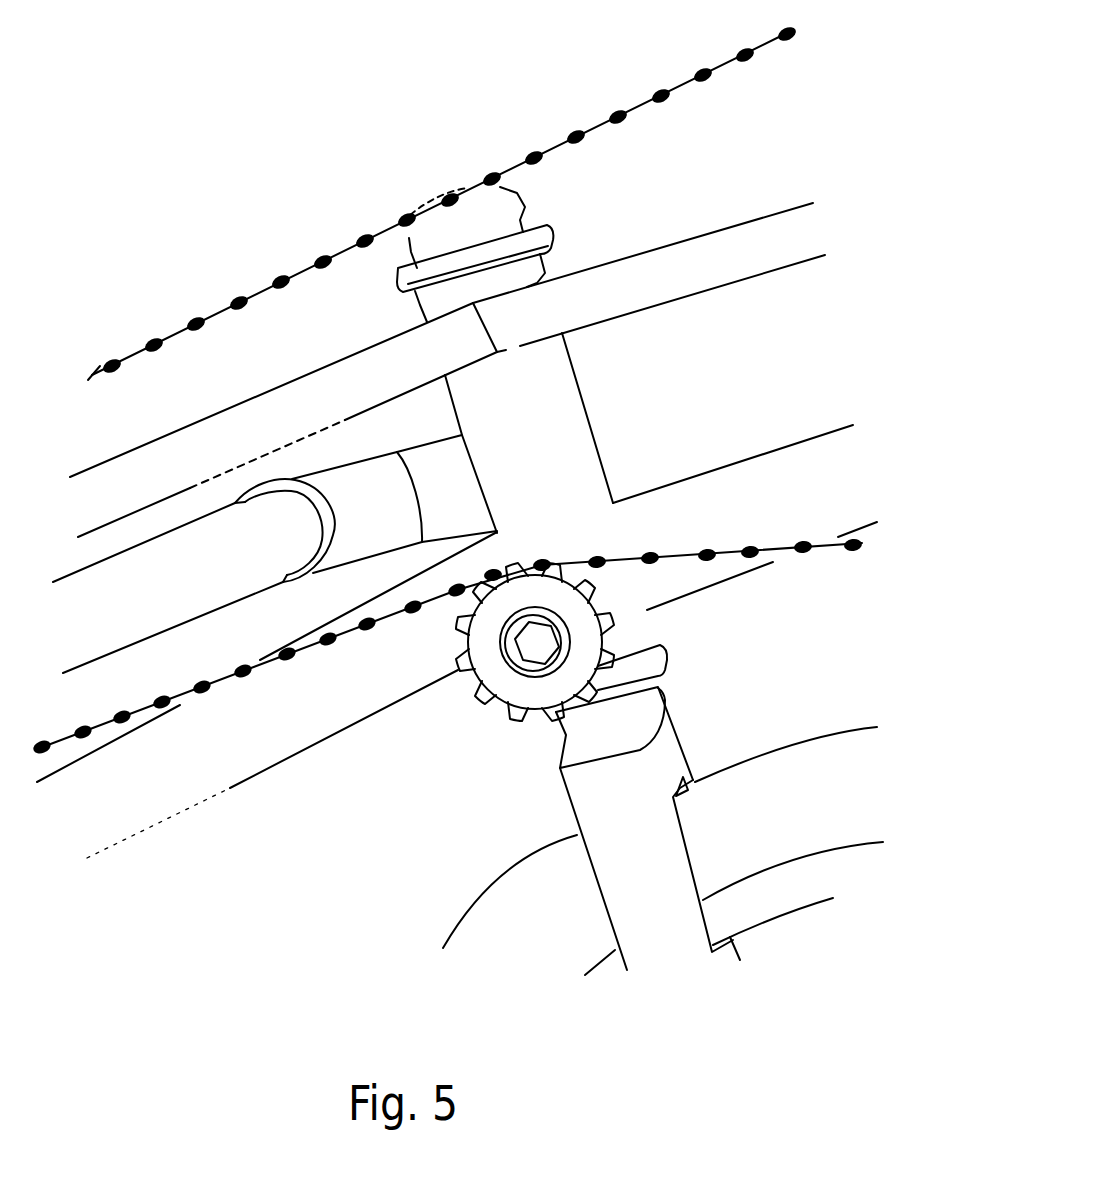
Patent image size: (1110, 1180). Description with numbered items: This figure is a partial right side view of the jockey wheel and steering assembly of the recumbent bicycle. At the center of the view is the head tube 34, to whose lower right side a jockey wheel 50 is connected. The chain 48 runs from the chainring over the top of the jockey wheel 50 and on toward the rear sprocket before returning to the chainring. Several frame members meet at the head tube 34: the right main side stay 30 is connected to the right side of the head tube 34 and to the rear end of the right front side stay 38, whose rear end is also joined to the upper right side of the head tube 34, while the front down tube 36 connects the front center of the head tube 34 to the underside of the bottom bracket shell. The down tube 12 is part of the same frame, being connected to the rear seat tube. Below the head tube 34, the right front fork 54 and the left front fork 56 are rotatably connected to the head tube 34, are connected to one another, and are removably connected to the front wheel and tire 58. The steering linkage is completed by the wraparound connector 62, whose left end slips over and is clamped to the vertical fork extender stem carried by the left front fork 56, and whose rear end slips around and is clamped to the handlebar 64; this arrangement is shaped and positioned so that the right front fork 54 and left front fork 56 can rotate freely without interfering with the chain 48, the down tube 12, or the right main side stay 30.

The down tube 12 is at (277, 770).
The right main side stay 30 is at (118, 452).
The head tube 34 is at (457, 428).
The front down tube 36 is at (708, 596).
The right front side stay 38 is at (663, 246).
The chain 48 is at (383, 625).
The jockey wheel 50 is at (492, 715).
The right front fork 54 is at (586, 875).
The left front fork 56 is at (697, 767).
The front wheel and tire 58 is at (803, 741).
The wraparound connector 62 is at (413, 447).
The handlebar 64 is at (225, 505).